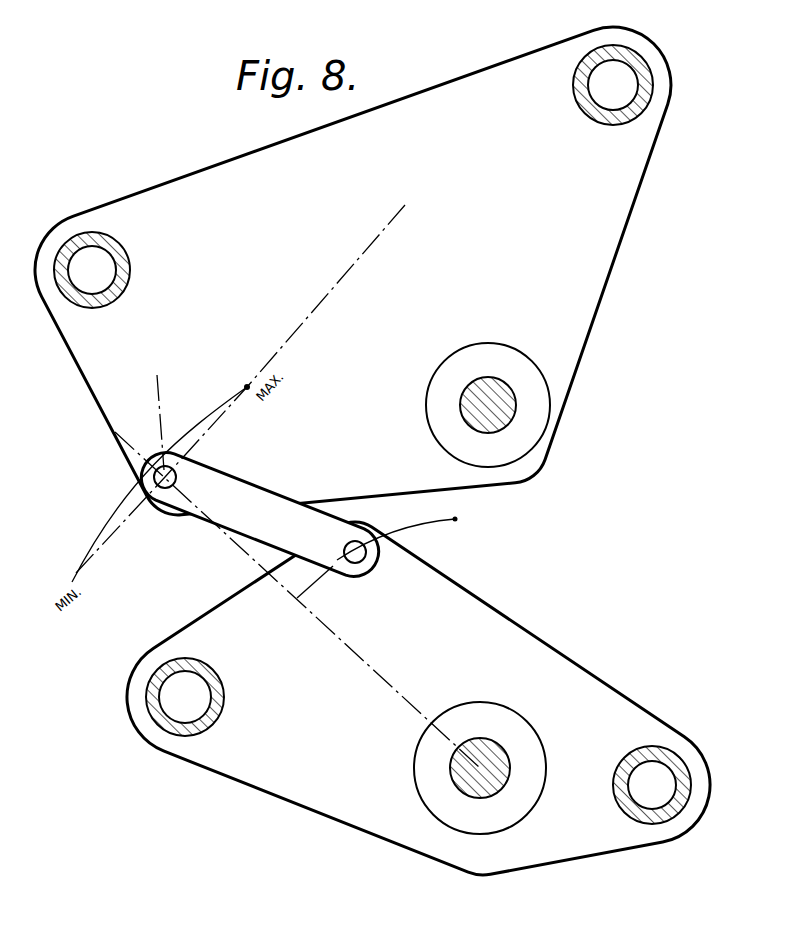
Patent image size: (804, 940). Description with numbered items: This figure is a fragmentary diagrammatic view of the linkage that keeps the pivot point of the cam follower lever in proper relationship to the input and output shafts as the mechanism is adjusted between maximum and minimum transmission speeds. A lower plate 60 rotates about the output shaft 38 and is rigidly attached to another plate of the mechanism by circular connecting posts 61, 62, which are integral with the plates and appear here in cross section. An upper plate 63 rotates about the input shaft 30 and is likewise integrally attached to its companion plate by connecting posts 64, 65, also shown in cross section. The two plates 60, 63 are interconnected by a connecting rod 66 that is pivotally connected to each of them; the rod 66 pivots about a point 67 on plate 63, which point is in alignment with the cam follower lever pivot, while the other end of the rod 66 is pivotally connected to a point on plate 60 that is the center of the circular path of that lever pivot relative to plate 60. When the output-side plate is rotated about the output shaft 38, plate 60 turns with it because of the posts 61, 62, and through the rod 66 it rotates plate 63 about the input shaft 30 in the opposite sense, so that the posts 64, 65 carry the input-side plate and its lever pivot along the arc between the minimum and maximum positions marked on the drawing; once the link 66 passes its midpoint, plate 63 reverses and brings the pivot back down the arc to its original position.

The input shaft 30 is at (497, 390).
The output shaft 38 is at (497, 757).
The plate 60 is at (492, 654).
The circular connecting post 61 is at (200, 707).
The circular connecting post 62 is at (633, 795).
The plate 63 is at (473, 246).
The connecting post 64 is at (597, 90).
The connecting post 65 is at (110, 259).
The connecting rod 66 is at (235, 508).
The pivot point 67 is at (151, 503).